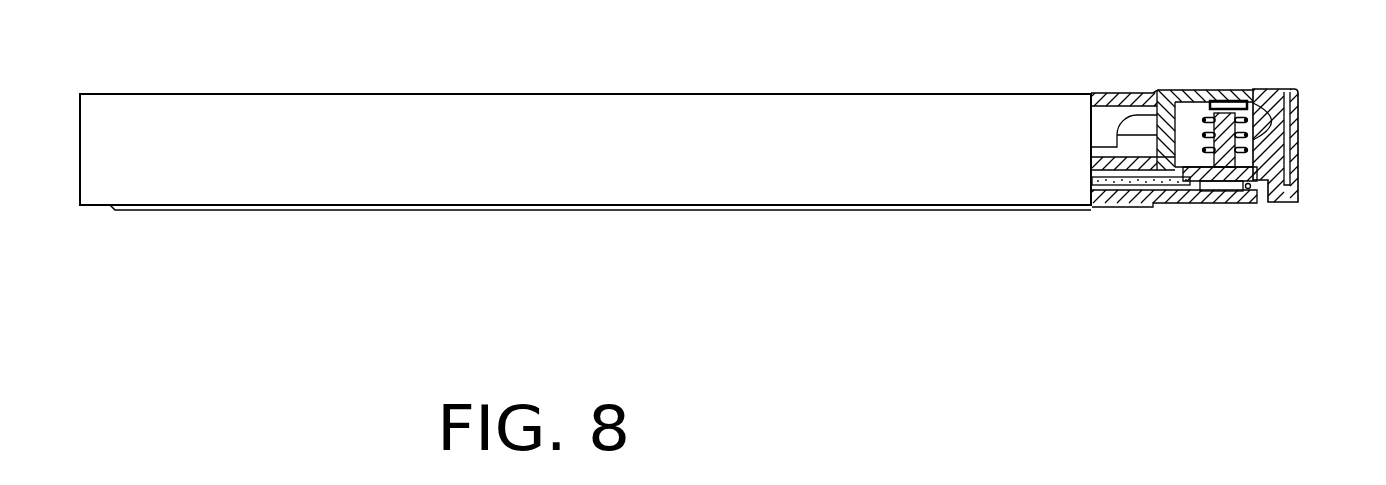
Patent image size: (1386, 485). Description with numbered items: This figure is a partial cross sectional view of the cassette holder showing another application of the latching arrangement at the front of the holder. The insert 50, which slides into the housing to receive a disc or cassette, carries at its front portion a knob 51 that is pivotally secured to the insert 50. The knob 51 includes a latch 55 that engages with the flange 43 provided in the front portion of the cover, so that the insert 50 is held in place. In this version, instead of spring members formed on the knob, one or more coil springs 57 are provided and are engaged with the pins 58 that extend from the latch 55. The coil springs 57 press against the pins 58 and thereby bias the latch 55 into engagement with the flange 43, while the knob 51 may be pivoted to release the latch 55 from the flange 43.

The insert 50 is at (1173, 92).
The coil springs 57 is at (1238, 92).
The knob 51 is at (1298, 130).
The pins 58 is at (1262, 147).
The latch 55 is at (1200, 177).
The flange 43 is at (1231, 190).